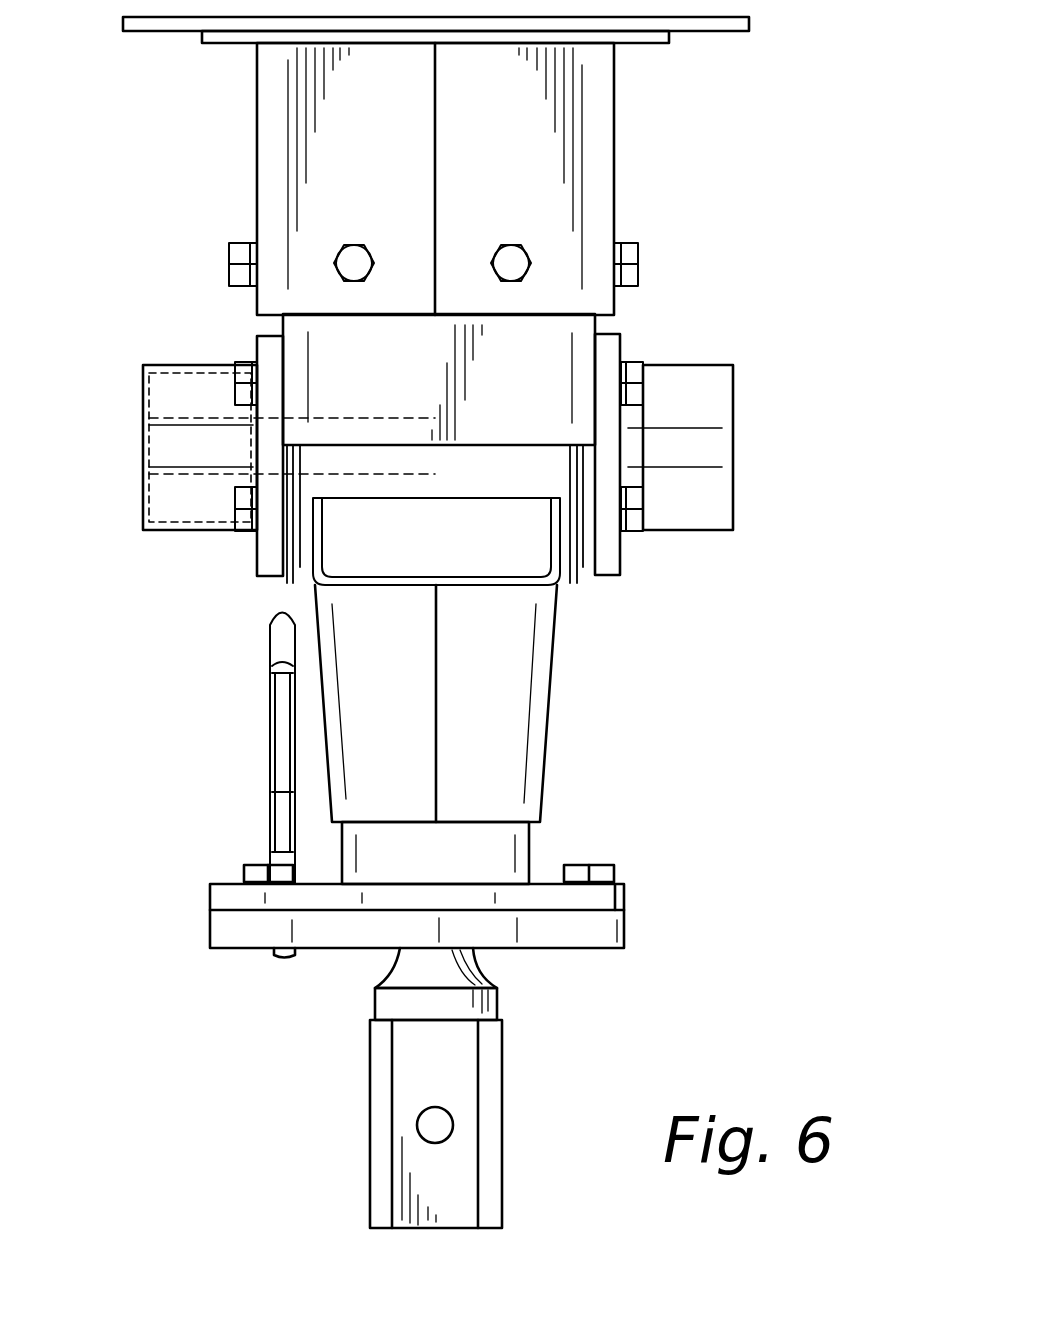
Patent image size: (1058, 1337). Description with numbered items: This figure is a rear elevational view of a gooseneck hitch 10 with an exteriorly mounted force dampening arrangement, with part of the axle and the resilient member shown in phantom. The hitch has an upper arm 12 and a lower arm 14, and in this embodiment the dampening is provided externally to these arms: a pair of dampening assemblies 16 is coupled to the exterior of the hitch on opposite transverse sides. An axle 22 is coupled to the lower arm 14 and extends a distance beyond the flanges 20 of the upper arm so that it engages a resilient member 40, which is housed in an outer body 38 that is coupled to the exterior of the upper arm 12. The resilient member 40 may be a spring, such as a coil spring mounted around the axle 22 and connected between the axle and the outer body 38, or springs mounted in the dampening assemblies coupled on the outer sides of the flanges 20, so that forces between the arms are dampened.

The hitch 10 is at (805, 730).
The upper arm 12 is at (557, 360).
The lower arm 14 is at (551, 771).
The dampening assembly 16 is at (735, 383).
The flanges 20 is at (289, 571).
The axle 22 is at (143, 437).
The outer body 38 is at (190, 530).
The resilient member 40 is at (180, 370).